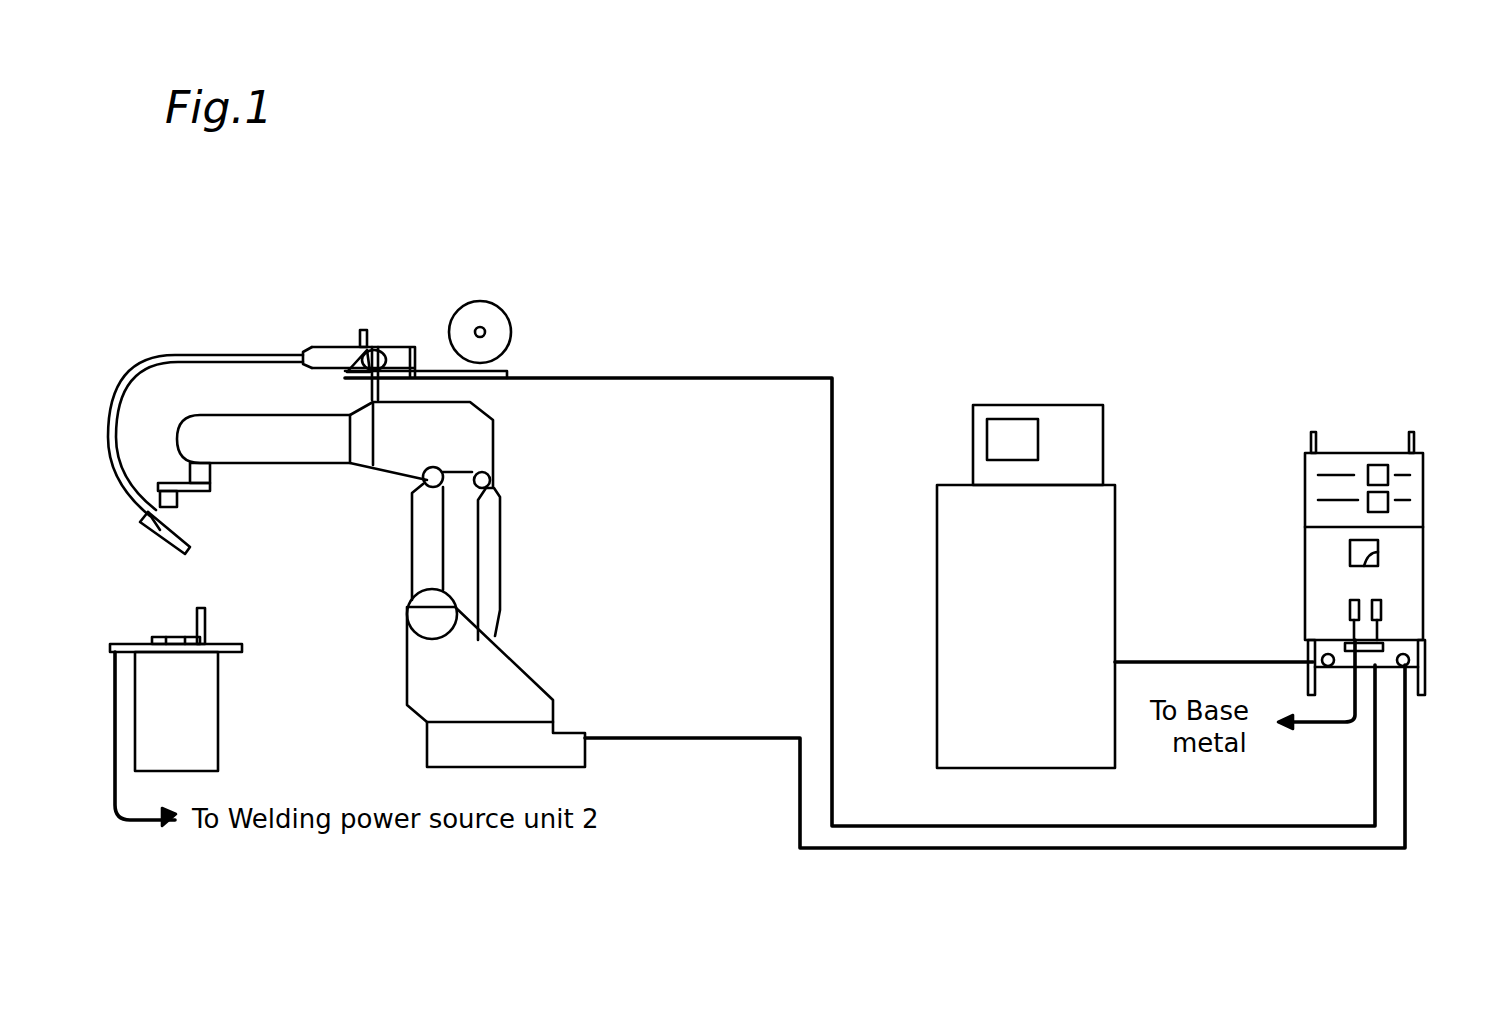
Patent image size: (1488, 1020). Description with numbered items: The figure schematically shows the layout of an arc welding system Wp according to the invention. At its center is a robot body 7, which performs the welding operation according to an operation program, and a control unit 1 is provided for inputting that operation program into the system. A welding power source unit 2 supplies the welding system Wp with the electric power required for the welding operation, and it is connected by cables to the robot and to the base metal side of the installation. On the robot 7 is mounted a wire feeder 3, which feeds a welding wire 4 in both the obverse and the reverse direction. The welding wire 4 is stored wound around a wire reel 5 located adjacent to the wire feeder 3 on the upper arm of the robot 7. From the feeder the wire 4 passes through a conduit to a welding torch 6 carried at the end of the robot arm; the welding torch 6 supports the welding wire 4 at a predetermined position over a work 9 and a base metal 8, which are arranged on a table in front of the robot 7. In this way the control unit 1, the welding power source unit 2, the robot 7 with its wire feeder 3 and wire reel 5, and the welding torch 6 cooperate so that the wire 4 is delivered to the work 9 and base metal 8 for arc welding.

The control unit 1 is at (1117, 545).
The welding power source unit 2 is at (1423, 538).
The wire feeder 3 is at (370, 328).
The welding wire 4 is at (418, 346).
The wire reel 5 is at (511, 330).
The welding torch 6 is at (148, 525).
The robot body 7 is at (495, 448).
The base metal 8 is at (243, 648).
The work 9 is at (207, 612).
The arc welding system Wp is at (1270, 236).